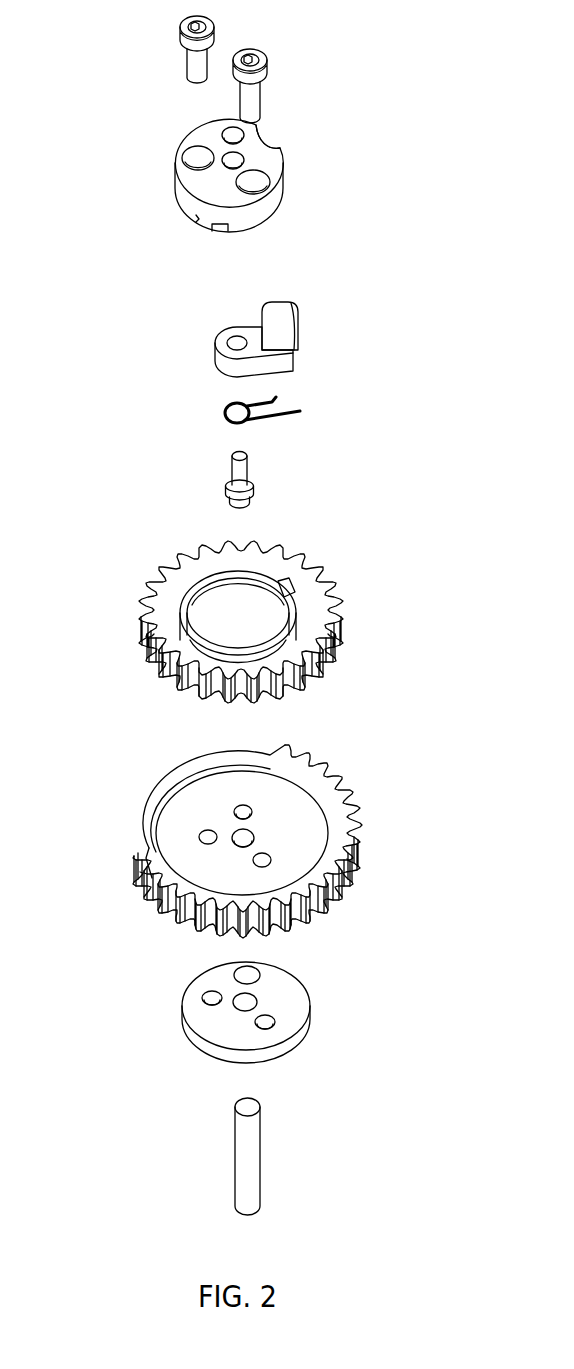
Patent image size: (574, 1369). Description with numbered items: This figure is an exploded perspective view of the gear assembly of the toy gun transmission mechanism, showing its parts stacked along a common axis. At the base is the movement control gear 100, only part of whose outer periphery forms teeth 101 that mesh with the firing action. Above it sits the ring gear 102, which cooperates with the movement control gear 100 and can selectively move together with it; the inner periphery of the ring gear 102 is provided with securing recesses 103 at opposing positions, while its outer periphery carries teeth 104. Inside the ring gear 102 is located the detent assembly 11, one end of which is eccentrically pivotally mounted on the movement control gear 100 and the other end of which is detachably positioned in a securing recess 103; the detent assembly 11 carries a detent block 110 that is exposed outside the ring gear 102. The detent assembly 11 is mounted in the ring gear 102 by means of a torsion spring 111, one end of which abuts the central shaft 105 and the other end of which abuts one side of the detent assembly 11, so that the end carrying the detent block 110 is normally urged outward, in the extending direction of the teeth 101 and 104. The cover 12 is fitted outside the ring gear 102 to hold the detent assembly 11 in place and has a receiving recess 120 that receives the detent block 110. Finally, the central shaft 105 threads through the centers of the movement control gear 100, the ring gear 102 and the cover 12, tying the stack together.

The cover 12 is at (200, 135).
The receiving recess 120 is at (277, 163).
The detent assembly 11 is at (213, 342).
The detent block 110 is at (282, 327).
The torsion spring 111 is at (222, 415).
The ring gear 102 is at (235, 607).
The securing recess 103 is at (292, 590).
The teeth 104 is at (320, 667).
The movement control gear 100 is at (248, 836).
The teeth 101 is at (338, 895).
The central shaft 105 is at (247, 1150).